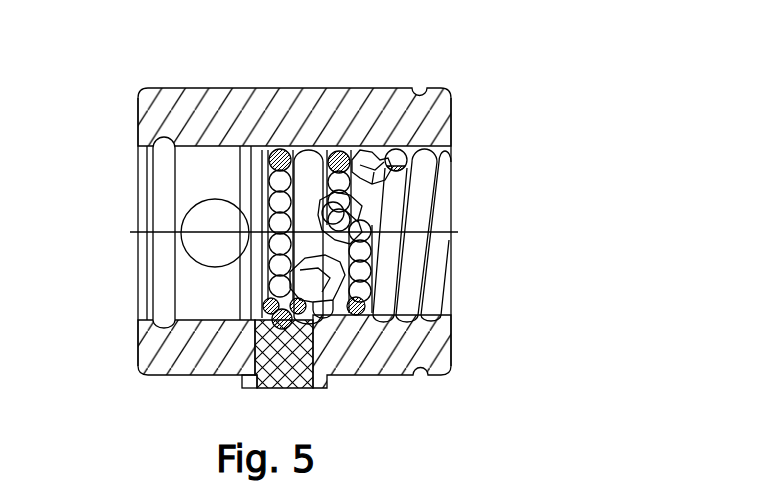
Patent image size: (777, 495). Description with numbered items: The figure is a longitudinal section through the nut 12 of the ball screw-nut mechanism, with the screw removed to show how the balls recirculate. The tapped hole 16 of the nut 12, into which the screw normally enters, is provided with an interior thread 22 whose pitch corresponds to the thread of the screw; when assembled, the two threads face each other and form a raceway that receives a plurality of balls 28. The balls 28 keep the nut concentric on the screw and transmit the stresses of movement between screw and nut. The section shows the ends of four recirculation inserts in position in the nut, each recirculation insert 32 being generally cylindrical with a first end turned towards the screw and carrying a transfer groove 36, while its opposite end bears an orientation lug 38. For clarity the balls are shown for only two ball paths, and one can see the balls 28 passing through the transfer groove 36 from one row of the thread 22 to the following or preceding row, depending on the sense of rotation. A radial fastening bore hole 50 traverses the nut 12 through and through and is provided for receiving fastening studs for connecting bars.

The nut 12 is at (396, 86).
The tapped hole 16 is at (468, 196).
The interior thread 22 is at (440, 301).
The balls 28 is at (293, 186).
The recirculation insert 32 is at (293, 346).
The transfer groove 36 is at (352, 205).
The orientation lug 38 is at (242, 380).
The fastening bore hole 50 is at (203, 217).